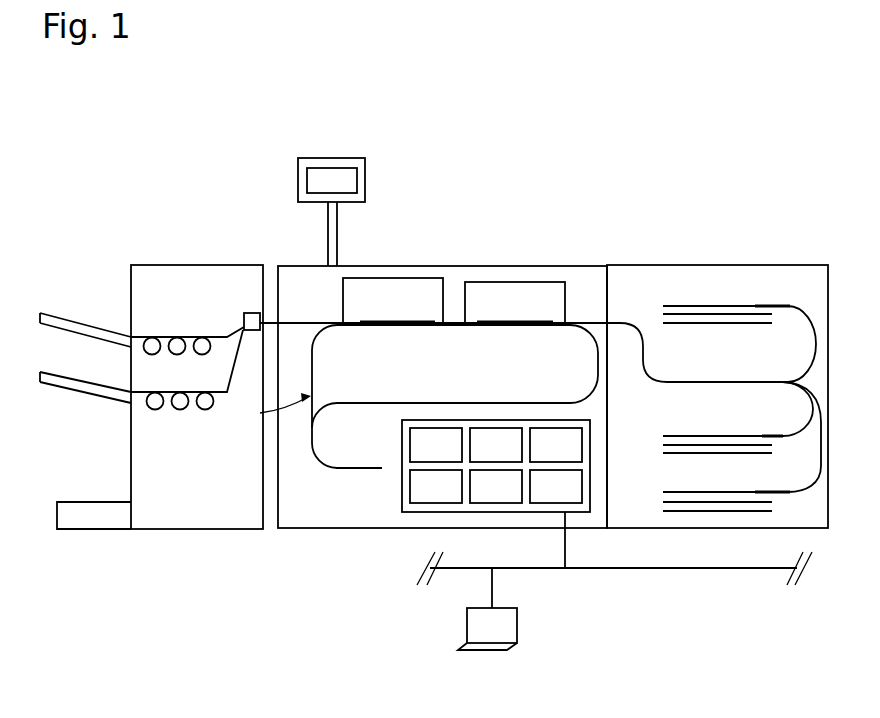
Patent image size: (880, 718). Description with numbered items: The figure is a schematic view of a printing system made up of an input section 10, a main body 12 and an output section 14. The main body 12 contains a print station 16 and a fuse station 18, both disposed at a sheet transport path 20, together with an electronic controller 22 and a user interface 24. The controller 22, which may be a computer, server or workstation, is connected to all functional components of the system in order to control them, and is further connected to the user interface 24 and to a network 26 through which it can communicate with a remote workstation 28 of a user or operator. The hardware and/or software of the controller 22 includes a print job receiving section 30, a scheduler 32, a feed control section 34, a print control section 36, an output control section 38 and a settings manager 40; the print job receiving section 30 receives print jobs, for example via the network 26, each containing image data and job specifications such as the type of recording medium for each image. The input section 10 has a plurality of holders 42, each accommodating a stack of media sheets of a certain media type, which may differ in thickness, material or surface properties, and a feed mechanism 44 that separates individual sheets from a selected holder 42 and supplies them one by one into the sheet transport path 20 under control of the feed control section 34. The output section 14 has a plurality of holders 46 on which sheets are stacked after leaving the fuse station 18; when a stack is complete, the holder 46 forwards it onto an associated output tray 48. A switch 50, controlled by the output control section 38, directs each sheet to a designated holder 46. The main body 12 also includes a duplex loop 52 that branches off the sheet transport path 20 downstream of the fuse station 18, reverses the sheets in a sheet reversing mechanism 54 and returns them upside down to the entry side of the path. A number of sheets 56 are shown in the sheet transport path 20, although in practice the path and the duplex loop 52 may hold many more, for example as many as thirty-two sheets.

The input section 10 is at (753, 265).
The main body 12 is at (508, 266).
The output section 14 is at (195, 265).
The print station 16 is at (523, 282).
The fuse station 18 is at (405, 277).
The sheet transport path 20 is at (588, 322).
The electronic controller 22 is at (466, 527).
The user interface 24 is at (335, 158).
The network 26 is at (650, 568).
The remote workstation 28 is at (482, 651).
The print job receiving section 30 is at (436, 445).
The scheduler 32 is at (496, 445).
The feed control section 34 is at (556, 445).
The print control section 36 is at (436, 487).
The output control section 38 is at (496, 487).
The settings manager 40 is at (556, 487).
The holders 42 is at (698, 306).
The feed mechanism 44 is at (737, 382).
The holders 46 is at (187, 337).
The output tray 48 is at (57, 313).
The switch 50 is at (248, 313).
The duplex loop 52 is at (265, 413).
The sheet reversing mechanism 54 is at (347, 469).
The sheets 56 is at (428, 322).